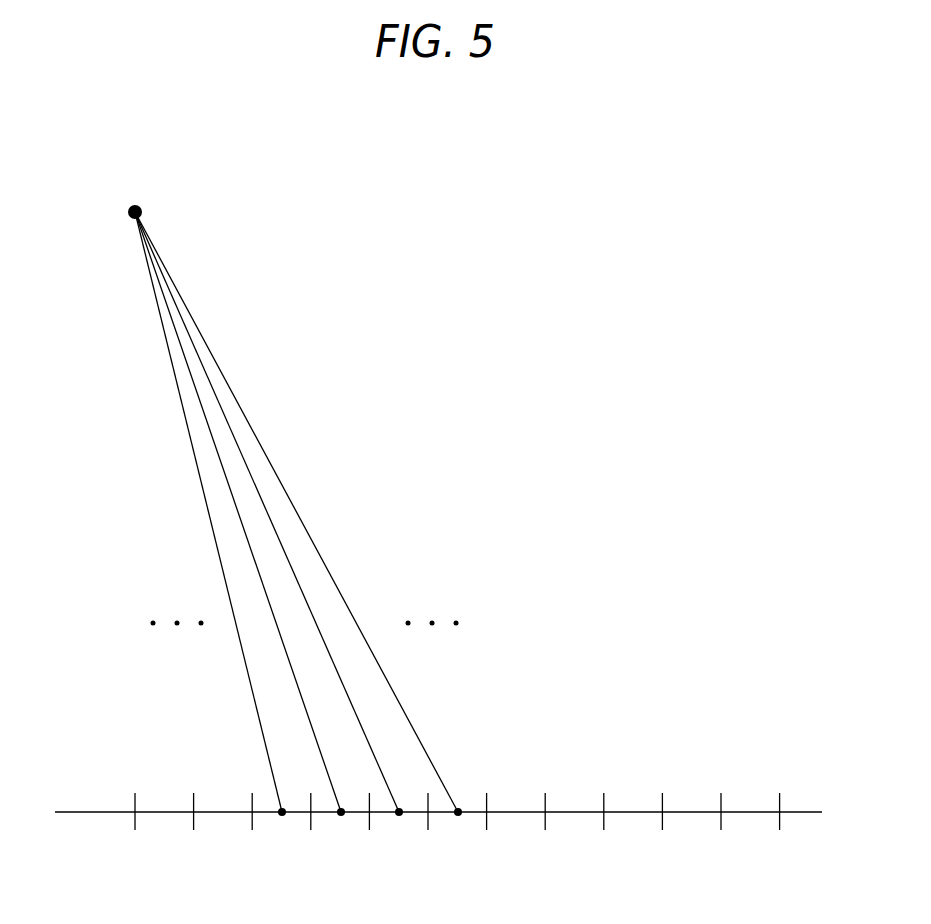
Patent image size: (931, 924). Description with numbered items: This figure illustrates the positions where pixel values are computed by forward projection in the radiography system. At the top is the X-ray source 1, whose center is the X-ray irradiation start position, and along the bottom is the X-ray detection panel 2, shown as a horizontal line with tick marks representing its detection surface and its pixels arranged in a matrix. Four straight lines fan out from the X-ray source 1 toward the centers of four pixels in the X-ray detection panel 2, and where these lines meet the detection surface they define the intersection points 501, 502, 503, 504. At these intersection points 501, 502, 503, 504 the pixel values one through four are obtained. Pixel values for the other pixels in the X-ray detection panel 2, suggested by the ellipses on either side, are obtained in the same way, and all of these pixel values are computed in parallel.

The X-ray source 1 is at (135, 205).
The X-ray detection panel 2 is at (800, 812).
The intersection point 501 is at (282, 815).
The intersection point 502 is at (341, 815).
The intersection point 503 is at (399, 815).
The intersection point 504 is at (458, 815).